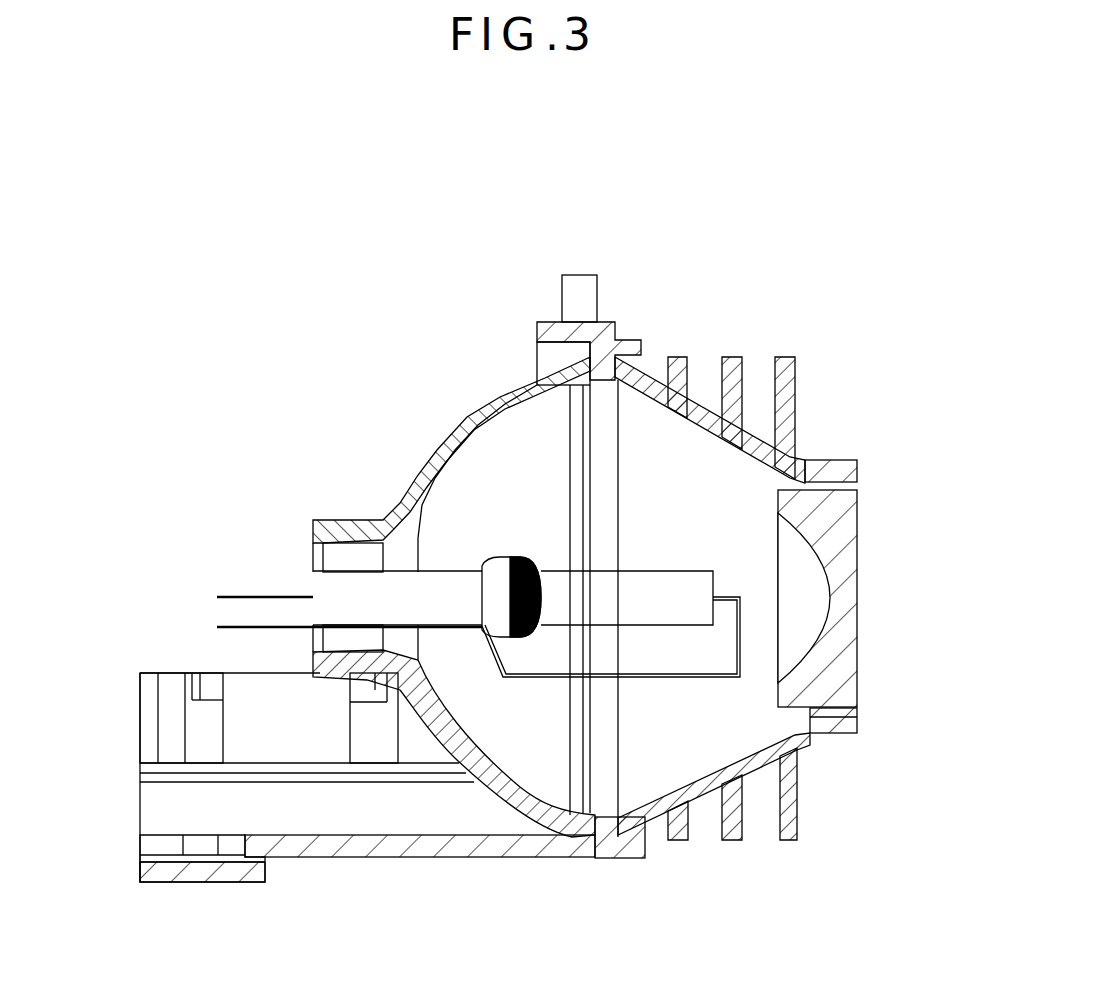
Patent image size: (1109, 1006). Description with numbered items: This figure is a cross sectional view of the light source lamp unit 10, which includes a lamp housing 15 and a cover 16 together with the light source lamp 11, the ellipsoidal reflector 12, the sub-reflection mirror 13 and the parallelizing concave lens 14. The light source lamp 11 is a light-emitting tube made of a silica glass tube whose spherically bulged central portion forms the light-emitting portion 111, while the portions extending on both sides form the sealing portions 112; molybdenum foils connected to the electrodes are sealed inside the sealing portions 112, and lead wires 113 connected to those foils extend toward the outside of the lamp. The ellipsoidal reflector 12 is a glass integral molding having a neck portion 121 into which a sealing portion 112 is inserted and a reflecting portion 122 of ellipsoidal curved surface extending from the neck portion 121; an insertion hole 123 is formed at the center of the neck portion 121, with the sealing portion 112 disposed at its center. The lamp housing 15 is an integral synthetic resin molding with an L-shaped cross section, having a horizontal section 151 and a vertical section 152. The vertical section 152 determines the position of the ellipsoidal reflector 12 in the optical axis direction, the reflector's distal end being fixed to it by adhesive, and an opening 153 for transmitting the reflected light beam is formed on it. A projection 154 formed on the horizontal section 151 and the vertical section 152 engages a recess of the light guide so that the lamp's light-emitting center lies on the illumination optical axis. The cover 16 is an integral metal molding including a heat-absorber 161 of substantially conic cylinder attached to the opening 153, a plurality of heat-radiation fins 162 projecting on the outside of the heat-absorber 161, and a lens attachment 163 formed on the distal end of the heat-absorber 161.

The light source lamp unit 10 is at (806, 222).
The light source lamp 11 is at (437, 561).
The light-emitting portion 111 is at (495, 565).
The sealing portion 112 is at (428, 607).
The lead wires 113 is at (238, 597).
The ellipsoidal reflector 12 is at (490, 403).
The neck portion 121 is at (345, 520).
The reflecting portion 122 is at (460, 428).
The insertion hole 123 is at (310, 571).
The sub-reflection mirror 13 is at (518, 555).
The parallelizing concave lens 14 is at (850, 573).
The lamp housing 15 is at (455, 857).
The horizontal section 151 is at (343, 847).
The vertical section 152 is at (605, 330).
The opening 153 is at (596, 858).
The projection 154 is at (578, 275).
The cover 16 is at (655, 368).
The heat-absorber 161 is at (797, 462).
The heat-radiation fins 162 is at (682, 358).
The lens attachment 163 is at (838, 460).